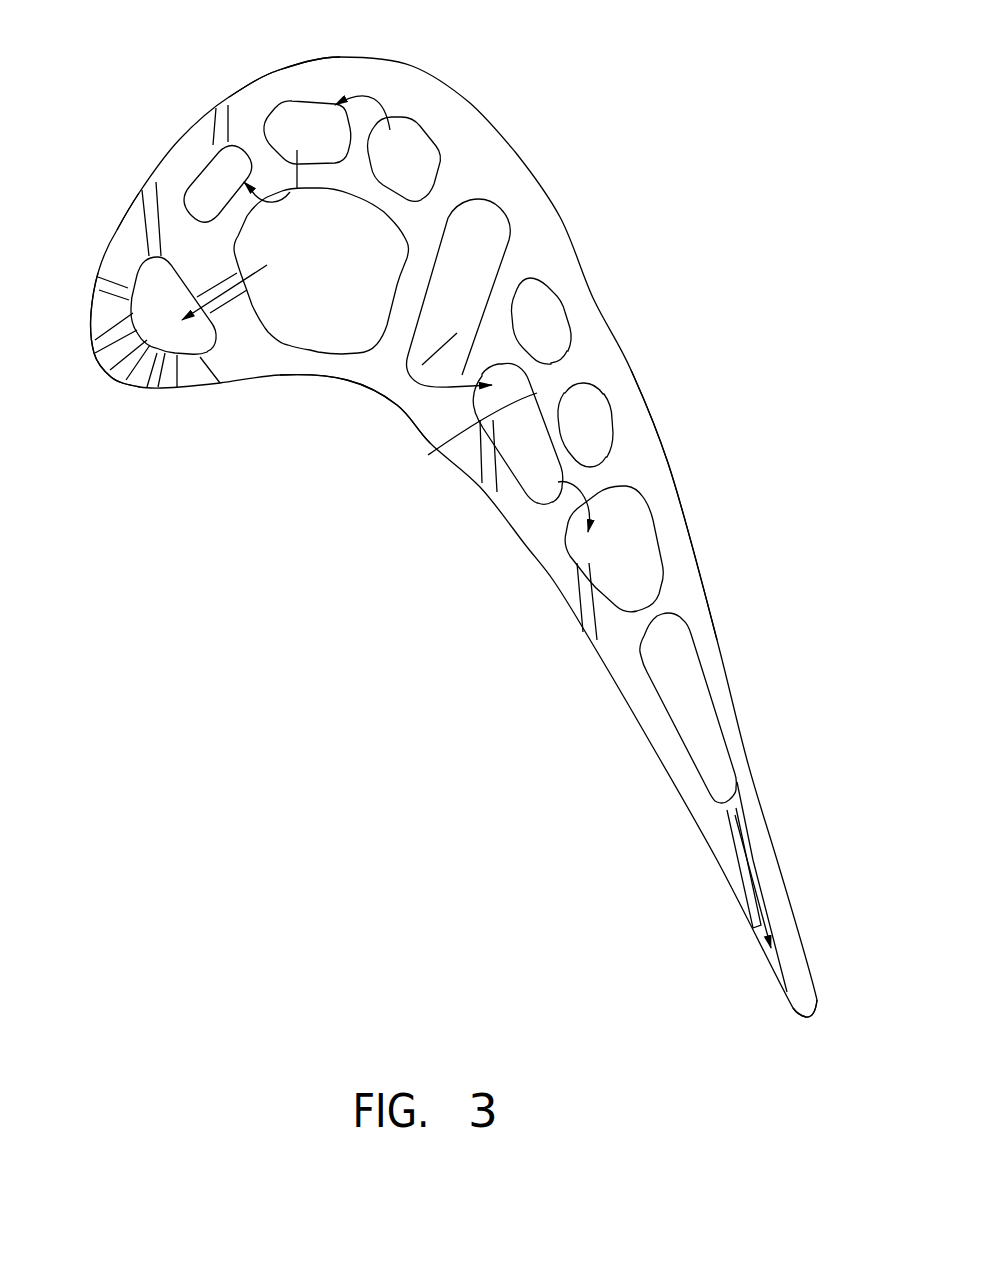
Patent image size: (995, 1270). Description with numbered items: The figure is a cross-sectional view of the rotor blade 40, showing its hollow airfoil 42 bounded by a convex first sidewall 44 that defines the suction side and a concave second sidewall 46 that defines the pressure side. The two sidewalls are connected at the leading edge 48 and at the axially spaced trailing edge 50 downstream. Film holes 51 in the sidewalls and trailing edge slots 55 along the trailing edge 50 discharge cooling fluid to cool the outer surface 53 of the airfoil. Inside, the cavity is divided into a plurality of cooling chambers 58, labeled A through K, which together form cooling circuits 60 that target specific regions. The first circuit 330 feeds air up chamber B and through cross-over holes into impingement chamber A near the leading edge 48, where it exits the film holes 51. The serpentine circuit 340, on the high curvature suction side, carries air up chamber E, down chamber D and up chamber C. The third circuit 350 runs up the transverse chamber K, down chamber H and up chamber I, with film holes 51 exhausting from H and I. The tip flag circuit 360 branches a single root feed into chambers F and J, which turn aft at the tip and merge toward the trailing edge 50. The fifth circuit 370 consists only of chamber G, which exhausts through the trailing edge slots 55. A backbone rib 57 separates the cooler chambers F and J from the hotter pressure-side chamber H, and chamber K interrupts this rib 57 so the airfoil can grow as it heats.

The rotor blade 40 is at (633, 213).
The airfoil 42 is at (267, 77).
The first sidewall 44 is at (668, 463).
The second sidewall 46 is at (397, 408).
The leading edge 48 is at (111, 378).
The trailing edge 50 is at (809, 1018).
The film holes 51 is at (220, 104).
The outer surface 53 is at (680, 800).
The trailing edge slots 55 is at (743, 868).
The backbone rib 57 is at (466, 433).
The cooling chambers 58 is at (308, 107).
The cooling circuits 60 is at (664, 433).
The first cooling circuit 330 is at (293, 398).
The serpentine cooling circuit 340 is at (428, 76).
The third cooling circuit 350 is at (507, 203).
The tip flag cooling circuit 360 is at (655, 329).
The fifth cooling circuit 370 is at (739, 688).